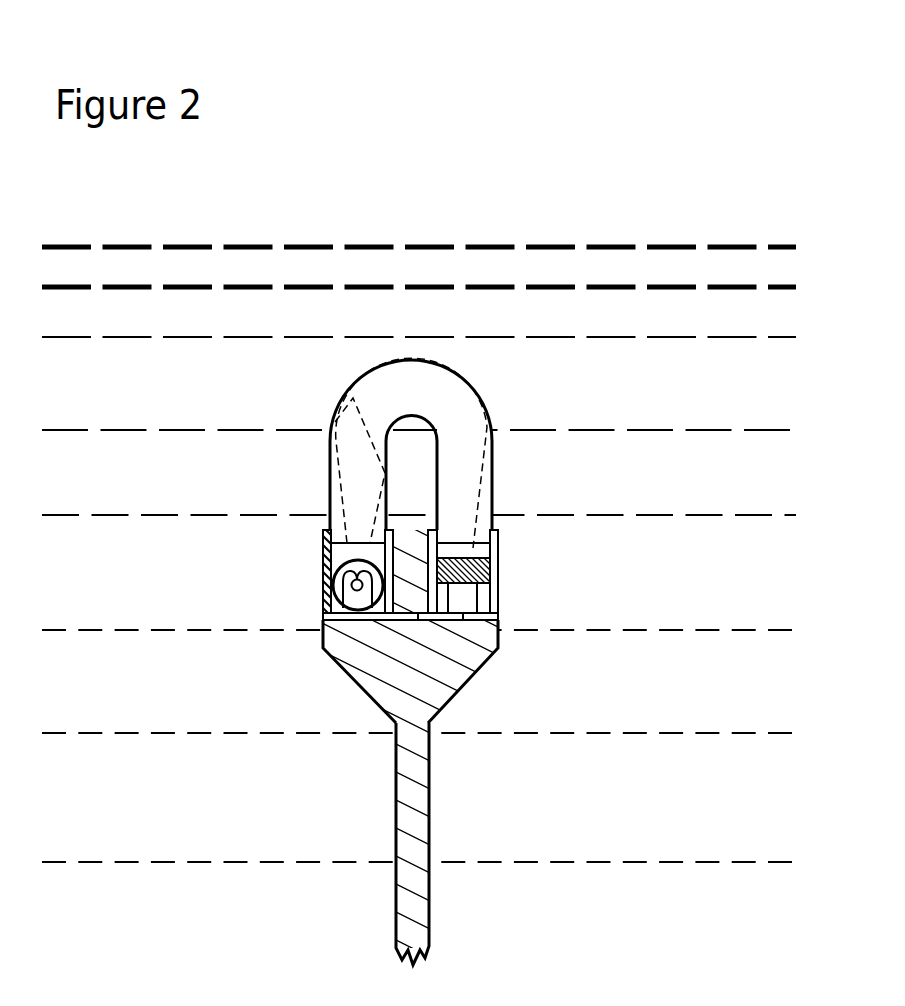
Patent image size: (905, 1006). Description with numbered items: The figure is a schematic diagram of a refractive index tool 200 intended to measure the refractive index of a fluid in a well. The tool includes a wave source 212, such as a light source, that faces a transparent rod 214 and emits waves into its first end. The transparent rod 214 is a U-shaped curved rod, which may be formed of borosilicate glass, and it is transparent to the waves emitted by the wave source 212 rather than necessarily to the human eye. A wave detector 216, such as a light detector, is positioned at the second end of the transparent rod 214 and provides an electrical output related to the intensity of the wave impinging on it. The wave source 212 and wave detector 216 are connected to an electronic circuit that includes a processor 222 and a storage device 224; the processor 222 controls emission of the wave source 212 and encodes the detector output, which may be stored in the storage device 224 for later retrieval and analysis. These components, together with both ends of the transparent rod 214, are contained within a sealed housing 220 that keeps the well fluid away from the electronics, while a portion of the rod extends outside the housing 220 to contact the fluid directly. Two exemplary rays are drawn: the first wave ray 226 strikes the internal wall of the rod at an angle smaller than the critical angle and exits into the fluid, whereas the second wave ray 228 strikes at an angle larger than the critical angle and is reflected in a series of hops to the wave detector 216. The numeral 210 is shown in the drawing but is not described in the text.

The refractive index tool 200 is at (564, 340).
The anchor body / stem 210 is at (363, 618).
The wave source 212 is at (348, 591).
The transparent rod 214 is at (492, 473).
The wave detector 216 is at (463, 598).
The housing 220 is at (500, 639).
The processor 222 is at (485, 653).
The storage device 224 is at (433, 620).
The first wave ray 226 is at (369, 437).
The second wave ray 228 is at (470, 402).